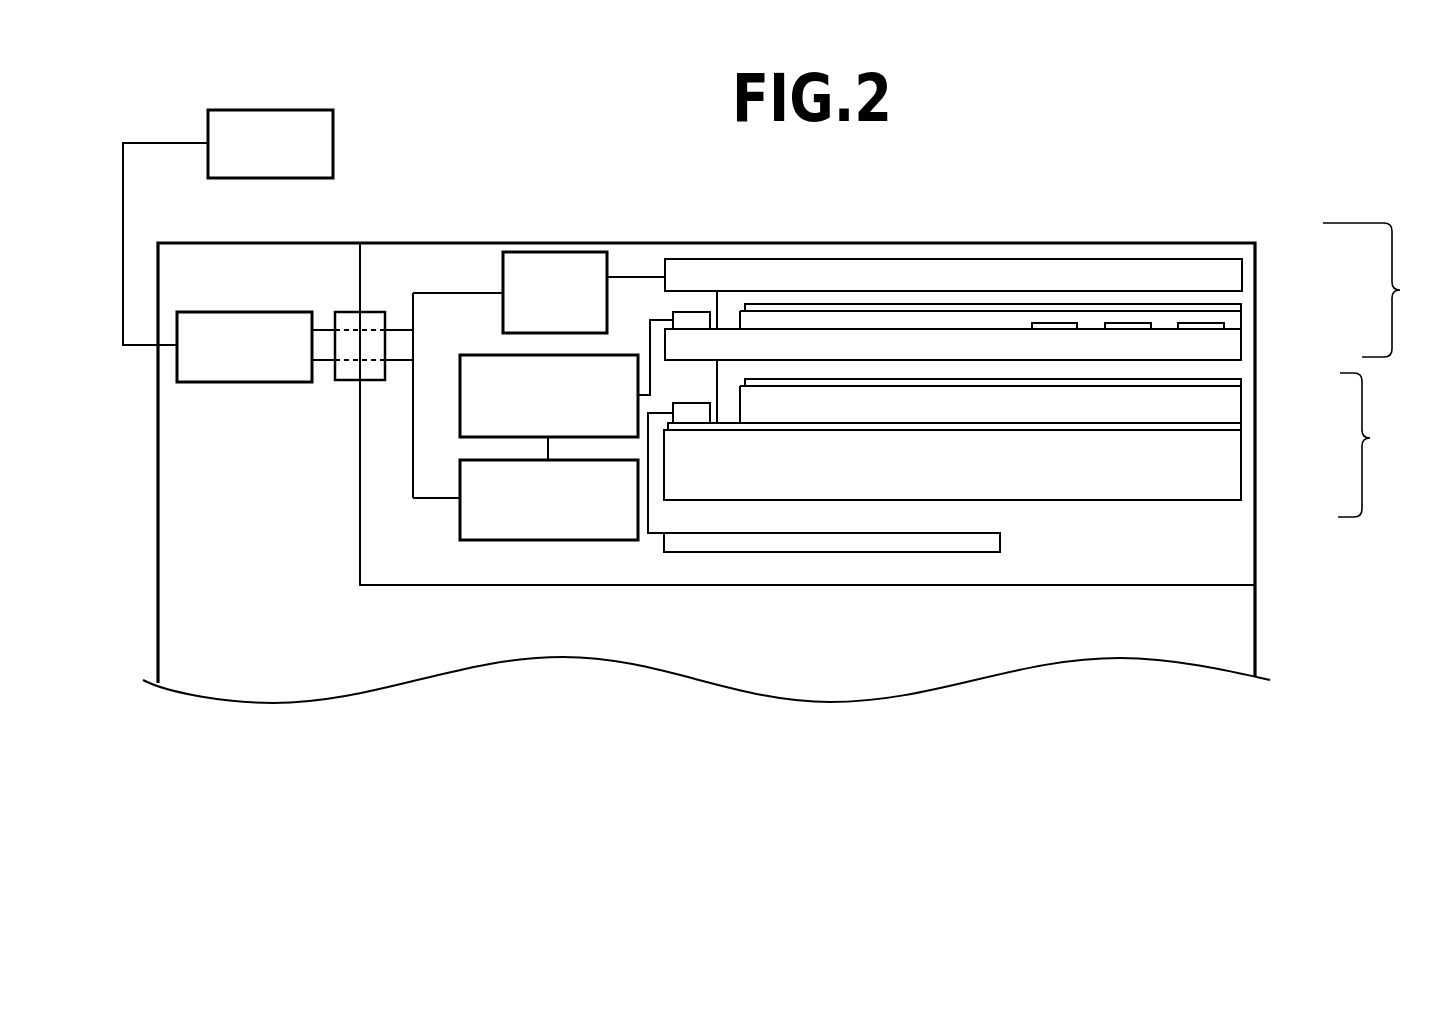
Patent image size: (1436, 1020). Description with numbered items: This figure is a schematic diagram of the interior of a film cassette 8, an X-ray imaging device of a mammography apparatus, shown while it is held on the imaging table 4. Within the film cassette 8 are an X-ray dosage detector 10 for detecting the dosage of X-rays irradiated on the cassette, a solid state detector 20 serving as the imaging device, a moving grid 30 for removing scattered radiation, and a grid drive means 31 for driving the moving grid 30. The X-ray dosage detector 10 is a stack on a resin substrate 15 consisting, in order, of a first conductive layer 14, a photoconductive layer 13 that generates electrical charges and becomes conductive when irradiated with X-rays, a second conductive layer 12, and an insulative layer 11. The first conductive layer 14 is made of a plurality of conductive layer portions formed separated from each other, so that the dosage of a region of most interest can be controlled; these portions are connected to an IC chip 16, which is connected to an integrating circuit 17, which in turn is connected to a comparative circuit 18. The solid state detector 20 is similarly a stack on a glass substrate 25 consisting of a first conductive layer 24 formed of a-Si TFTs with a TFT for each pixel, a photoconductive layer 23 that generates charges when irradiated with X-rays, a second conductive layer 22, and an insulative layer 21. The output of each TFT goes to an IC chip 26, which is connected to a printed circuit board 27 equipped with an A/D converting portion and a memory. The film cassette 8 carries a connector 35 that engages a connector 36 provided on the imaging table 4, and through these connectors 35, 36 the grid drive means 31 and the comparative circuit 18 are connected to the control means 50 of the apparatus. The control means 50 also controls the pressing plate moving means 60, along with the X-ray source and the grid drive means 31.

The imaging table 4 is at (1255, 632).
The film cassette 8 is at (1145, 242).
The X-ray dosage detector 10 is at (1378, 290).
The insulative layer 11 is at (1228, 302).
The second conductive layer 12 is at (1230, 307).
The photoconductive layer 13 is at (1230, 313).
The first conductive layer 14 is at (1232, 325).
The resin substrate 15 is at (1233, 340).
The IC chip 16 is at (690, 322).
The integrating circuit 17 is at (460, 393).
The comparative circuit 18 is at (460, 485).
The solid state detector 20 is at (1370, 445).
The insulative layer 21 is at (1233, 366).
The second conductive layer 22 is at (1233, 381).
The photoconductive layer 23 is at (1233, 401).
The first conductive layer 24 is at (1235, 426).
The glass substrate 25 is at (1233, 465).
The IC chip 26 is at (692, 415).
The printed circuit board 27 is at (812, 542).
The moving grid 30 is at (1223, 272).
The grid drive means 31 is at (555, 252).
The connector 35 is at (372, 312).
The connector 36 is at (343, 313).
The control means 50 is at (260, 312).
The pressing plate moving means 60 is at (282, 108).